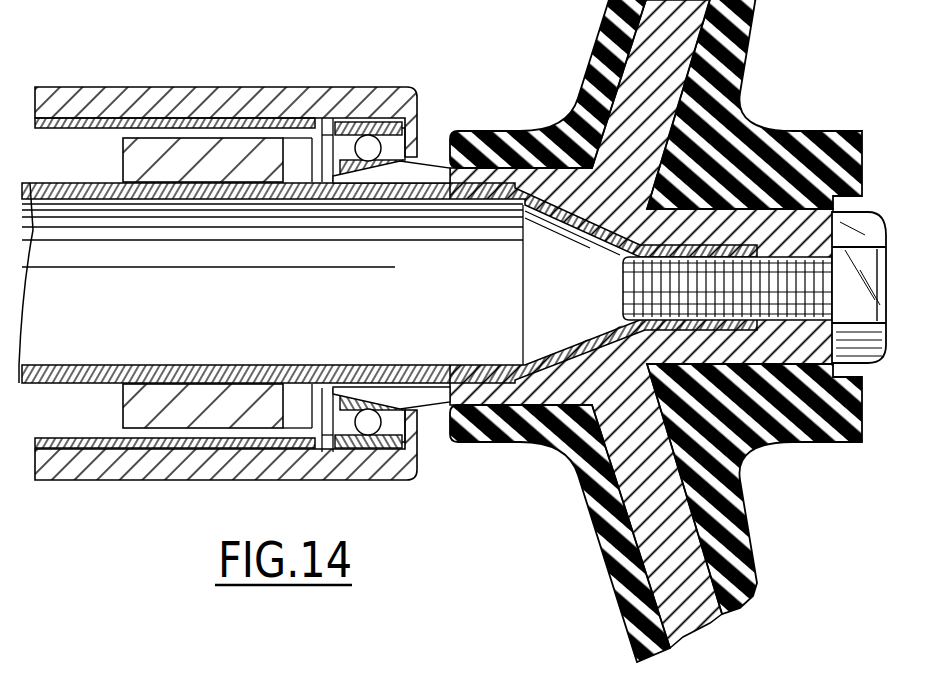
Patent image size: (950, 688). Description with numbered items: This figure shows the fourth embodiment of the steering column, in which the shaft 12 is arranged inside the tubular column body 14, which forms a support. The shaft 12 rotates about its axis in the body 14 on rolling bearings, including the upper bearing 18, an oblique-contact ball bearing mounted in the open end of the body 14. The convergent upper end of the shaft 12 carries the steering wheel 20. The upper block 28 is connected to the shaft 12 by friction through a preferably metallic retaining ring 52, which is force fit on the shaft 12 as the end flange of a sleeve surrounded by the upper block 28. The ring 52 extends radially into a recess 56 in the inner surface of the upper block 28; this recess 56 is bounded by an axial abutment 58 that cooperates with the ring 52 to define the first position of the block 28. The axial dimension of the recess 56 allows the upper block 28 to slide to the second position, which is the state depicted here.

The shaft 12 is at (70, 182).
The tubular column body 14 is at (143, 86).
The upper bearing 18 is at (347, 122).
The steering wheel 20 is at (790, 143).
The upper block 28 is at (417, 417).
The retaining ring 52 is at (473, 137).
The recess 56 is at (423, 417).
The axial abutment 58 is at (430, 170).